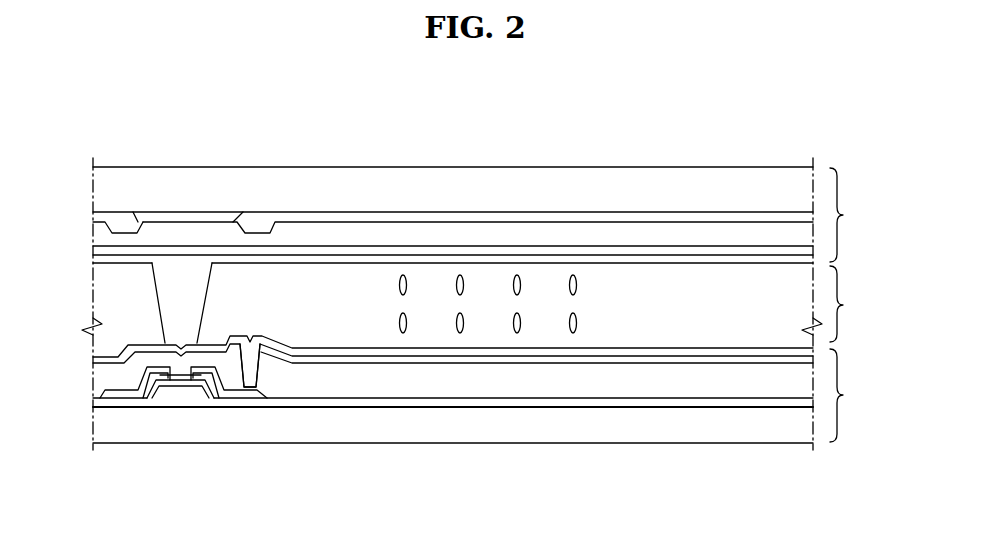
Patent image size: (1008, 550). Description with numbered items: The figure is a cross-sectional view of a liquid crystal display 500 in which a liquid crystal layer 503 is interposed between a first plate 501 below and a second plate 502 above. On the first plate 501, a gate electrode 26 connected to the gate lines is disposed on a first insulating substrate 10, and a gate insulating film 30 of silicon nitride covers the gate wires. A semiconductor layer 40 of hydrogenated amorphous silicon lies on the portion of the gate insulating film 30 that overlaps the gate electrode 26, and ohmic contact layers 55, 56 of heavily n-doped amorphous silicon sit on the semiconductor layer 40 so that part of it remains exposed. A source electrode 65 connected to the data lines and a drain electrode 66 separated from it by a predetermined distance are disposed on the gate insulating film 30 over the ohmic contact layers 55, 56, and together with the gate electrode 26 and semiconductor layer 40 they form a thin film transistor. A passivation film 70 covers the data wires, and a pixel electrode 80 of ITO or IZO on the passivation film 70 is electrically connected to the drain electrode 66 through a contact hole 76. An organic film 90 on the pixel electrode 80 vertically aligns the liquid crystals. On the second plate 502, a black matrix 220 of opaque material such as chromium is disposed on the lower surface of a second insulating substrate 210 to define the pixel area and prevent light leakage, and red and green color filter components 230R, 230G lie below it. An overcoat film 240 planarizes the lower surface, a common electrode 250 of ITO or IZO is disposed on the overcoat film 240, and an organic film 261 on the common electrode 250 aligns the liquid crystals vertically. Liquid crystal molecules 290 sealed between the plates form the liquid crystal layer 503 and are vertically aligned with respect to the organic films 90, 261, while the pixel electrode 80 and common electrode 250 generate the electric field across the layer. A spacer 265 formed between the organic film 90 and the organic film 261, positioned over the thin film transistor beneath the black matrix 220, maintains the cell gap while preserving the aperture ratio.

The liquid crystal display 500 is at (707, 122).
The first plate 501 is at (852, 395).
The second plate 502 is at (484, 214).
The liquid crystal layer 503 is at (852, 304).
The second insulating substrate 210 is at (180, 182).
The black matrix 220 is at (227, 215).
The green color filter component 230G is at (120, 225).
The red color filter component 230R is at (337, 213).
The overcoat film 240 is at (437, 232).
The common electrode 250 is at (518, 250).
The organic film 261 is at (573, 260).
The spacer 265 is at (185, 305).
The liquid crystal molecules 290 is at (577, 279).
The first insulating substrate 10 is at (428, 432).
The gate electrode 26 is at (184, 392).
The gate insulating film 30 is at (486, 400).
The semiconductor layer 40 is at (191, 378).
The ohmic contact layer 55 is at (166, 388).
The ohmic contact layer 56 is at (208, 378).
The source electrode 65 is at (158, 398).
The drain electrode 66 is at (222, 372).
The passivation film 70 is at (712, 385).
The contact hole 76 is at (251, 357).
The pixel electrode 80 is at (548, 360).
The organic film 90 is at (600, 351).